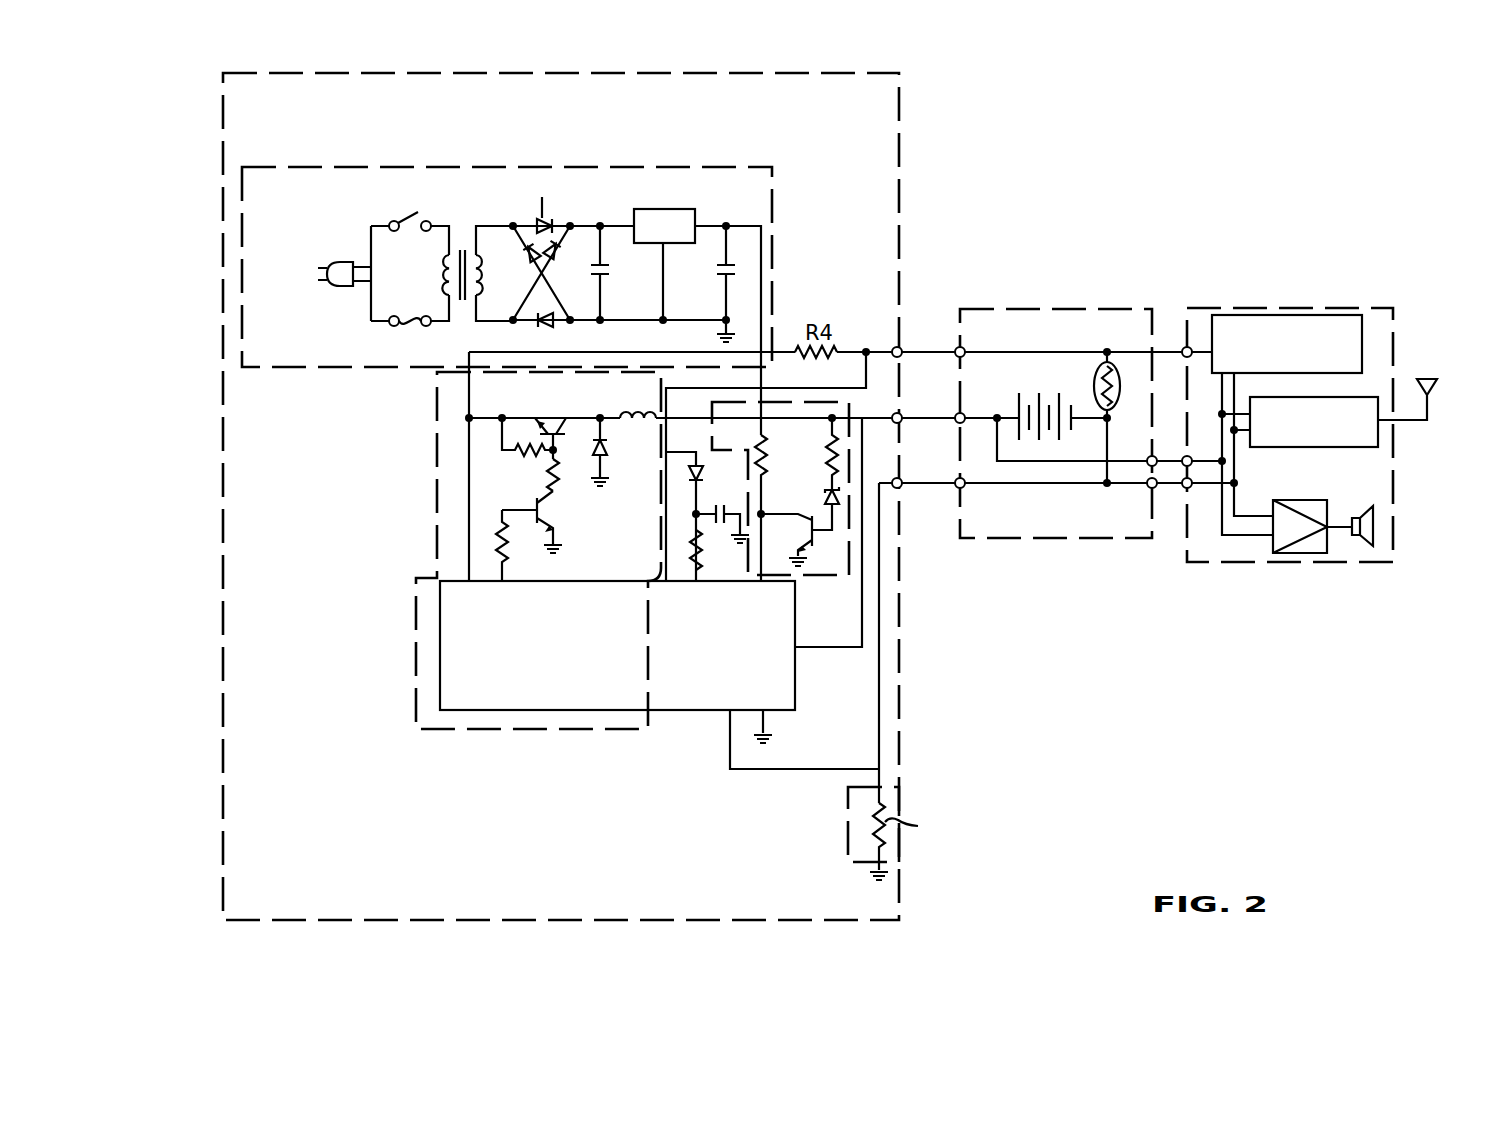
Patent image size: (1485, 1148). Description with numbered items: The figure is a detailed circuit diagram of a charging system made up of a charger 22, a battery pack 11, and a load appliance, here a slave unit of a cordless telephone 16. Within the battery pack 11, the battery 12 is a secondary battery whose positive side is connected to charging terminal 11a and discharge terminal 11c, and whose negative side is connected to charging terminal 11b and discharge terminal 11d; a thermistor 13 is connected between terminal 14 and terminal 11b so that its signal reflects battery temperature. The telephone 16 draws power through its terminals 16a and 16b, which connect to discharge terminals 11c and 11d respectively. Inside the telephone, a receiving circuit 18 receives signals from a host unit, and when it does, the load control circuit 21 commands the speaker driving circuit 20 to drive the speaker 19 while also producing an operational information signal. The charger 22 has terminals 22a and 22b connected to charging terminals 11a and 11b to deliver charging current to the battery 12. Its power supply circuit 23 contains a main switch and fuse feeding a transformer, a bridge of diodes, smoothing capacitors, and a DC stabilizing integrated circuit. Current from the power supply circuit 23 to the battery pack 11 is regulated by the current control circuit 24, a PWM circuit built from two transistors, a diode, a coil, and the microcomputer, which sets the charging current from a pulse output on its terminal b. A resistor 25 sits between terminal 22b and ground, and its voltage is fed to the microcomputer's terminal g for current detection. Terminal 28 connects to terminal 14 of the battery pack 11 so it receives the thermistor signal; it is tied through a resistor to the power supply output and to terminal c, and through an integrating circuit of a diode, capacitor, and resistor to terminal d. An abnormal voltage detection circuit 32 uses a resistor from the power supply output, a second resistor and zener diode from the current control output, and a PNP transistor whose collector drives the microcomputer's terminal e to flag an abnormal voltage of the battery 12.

The battery pack 11 is at (976, 307).
The charging terminal 11a is at (963, 412).
The charging terminal 11b is at (963, 487).
The discharge terminal 11c is at (1150, 456).
The discharge terminal 11d is at (1150, 487).
The battery 12 is at (1037, 403).
The thermistor 13 is at (1112, 362).
The terminal 14 is at (965, 349).
The slave unit of cordless telephone 16 is at (1212, 307).
The terminal 16a is at (1192, 457).
The terminal 16b is at (1198, 490).
The receiving circuit 18 is at (1328, 448).
The speaker 19 is at (1365, 545).
The speaker driving circuit 20 is at (1302, 555).
The load control circuit 21 is at (1273, 315).
The charger 22 is at (675, 921).
The terminal 22a is at (899, 423).
The terminal 22b is at (899, 488).
The power supply circuit 23 is at (280, 368).
The current control circuit 24 is at (437, 423).
The resistor 25 is at (902, 793).
The terminal 28 is at (902, 348).
The abnormal voltage detection circuit 32 is at (850, 407).